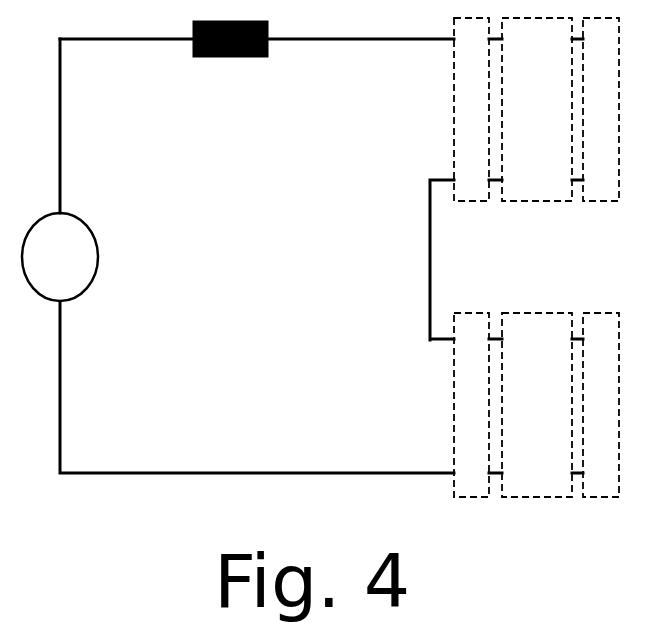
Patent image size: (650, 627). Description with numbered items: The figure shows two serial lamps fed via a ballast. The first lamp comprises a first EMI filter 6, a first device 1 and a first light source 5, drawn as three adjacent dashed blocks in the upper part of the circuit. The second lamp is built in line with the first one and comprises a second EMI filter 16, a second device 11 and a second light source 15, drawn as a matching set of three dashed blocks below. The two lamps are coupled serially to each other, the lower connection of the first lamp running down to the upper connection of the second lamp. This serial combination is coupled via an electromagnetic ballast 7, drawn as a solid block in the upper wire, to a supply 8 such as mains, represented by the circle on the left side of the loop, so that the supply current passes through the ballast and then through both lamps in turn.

The first device 1 is at (539, 201).
The first light source 5 is at (600, 201).
The first EMI filter 6 is at (470, 201).
The electromagnetic ballast 7 is at (229, 57).
The supply 8 is at (98, 257).
The second device 11 is at (539, 497).
The second light source 15 is at (600, 497).
The second EMI filter 16 is at (470, 497).